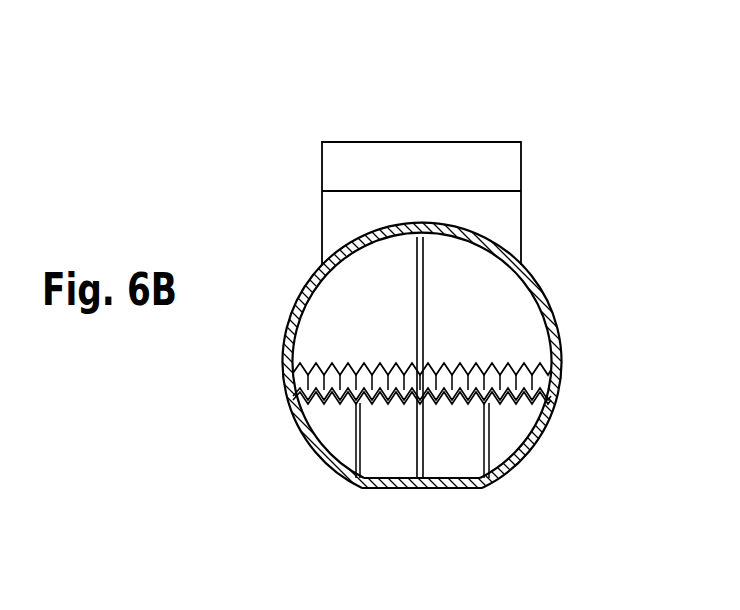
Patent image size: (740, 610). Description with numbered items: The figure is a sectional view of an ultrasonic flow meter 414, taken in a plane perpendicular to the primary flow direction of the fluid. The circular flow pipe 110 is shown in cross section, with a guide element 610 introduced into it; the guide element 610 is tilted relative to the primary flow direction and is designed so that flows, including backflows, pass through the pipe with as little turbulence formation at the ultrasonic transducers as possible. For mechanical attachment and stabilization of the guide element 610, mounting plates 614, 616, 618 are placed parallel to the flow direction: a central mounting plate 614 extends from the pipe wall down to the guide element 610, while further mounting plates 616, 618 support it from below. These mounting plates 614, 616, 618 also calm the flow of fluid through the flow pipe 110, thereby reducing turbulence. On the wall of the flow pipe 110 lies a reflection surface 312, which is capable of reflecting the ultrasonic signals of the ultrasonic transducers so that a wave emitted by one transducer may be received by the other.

The ultrasonic flow meter 414 is at (406, 108).
The flow pipe 110 is at (546, 316).
The mounting plate 614 is at (423, 309).
The guide element 610 is at (556, 385).
The mounting plate 616 is at (362, 452).
The mounting plate 618 is at (424, 462).
The reflection surface 312 is at (438, 476).